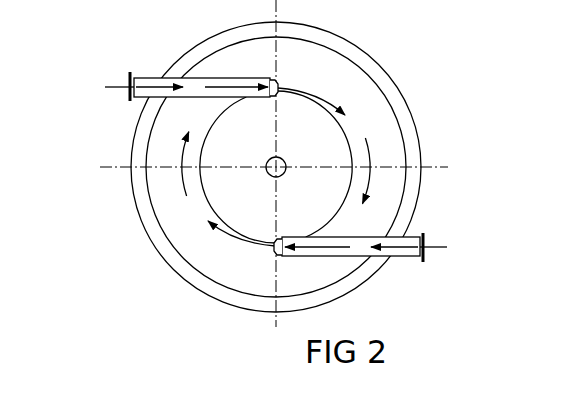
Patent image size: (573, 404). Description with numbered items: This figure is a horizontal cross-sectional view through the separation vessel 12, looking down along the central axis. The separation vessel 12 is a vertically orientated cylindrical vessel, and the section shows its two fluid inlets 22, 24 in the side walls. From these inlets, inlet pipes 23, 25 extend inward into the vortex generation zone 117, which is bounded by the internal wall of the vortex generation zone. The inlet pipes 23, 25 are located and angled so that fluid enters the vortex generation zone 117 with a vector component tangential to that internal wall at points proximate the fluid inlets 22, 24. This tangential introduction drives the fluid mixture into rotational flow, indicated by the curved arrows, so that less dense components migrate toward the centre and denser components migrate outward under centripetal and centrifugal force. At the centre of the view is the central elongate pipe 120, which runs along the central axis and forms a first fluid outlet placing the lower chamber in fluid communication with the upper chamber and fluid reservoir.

The separation vessel 12 is at (152, 278).
The fluid inlet 22 is at (118, 75).
The inlet pipe 23 is at (147, 82).
The fluid inlet 24 is at (431, 240).
The inlet pipe 25 is at (410, 253).
The vortex generation zone 117 is at (377, 143).
The central elongate pipe 120 is at (268, 173).